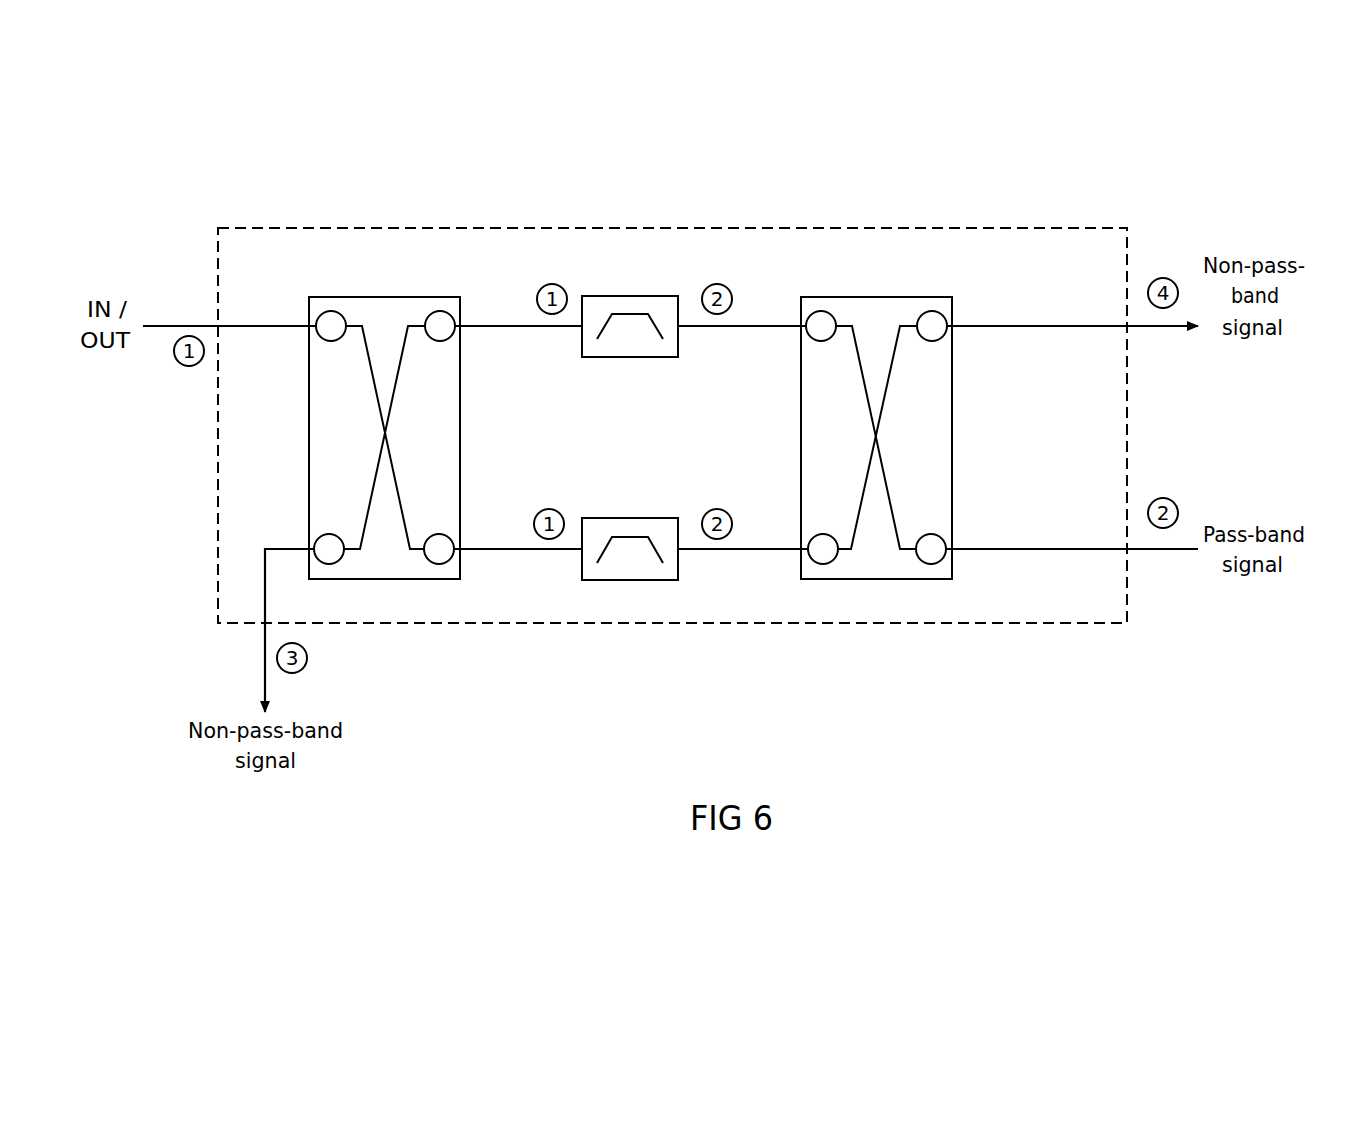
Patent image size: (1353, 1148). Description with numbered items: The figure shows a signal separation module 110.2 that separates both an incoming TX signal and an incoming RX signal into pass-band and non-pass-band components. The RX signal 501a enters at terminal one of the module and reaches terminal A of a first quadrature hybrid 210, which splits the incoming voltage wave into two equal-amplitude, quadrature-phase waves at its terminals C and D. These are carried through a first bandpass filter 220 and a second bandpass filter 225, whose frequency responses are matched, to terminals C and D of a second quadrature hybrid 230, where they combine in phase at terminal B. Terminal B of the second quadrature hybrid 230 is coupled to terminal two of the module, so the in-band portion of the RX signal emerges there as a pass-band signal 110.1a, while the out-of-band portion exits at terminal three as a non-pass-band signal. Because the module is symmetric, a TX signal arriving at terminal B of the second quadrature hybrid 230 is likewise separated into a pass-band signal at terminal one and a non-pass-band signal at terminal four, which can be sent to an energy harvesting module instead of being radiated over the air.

The RX signal 501a is at (173, 323).
The signal separation module 110.2 is at (1086, 228).
The first quadrature hybrid 210 is at (413, 297).
The first bandpass filter 220 is at (637, 296).
The second bandpass filter 225 is at (633, 518).
The second quadrature hybrid 230 is at (904, 297).
The pass-band signal 110.1a is at (1166, 556).